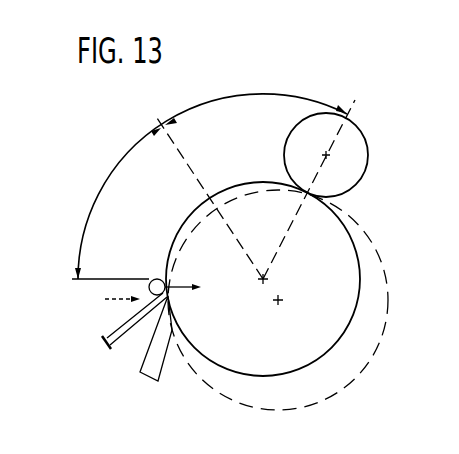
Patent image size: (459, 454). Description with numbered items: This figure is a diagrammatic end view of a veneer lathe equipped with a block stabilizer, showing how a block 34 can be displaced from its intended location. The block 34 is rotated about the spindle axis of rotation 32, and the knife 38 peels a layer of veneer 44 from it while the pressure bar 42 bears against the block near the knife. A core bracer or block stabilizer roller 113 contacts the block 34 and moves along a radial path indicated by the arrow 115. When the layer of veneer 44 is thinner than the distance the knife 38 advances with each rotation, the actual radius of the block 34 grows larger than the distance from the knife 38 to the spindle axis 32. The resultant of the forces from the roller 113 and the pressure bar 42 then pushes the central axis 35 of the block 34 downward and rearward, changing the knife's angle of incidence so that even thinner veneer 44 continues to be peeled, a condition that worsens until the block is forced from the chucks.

The block 34 is at (385, 271).
The spindle axis of rotation 32 is at (265, 277).
The central axis 35 is at (280, 300).
The core bracer roller 113 is at (362, 170).
The arrow 115 is at (307, 183).
The pressure bar 42 is at (164, 272).
The layer of veneer 44 is at (120, 329).
The knife 38 is at (162, 372).